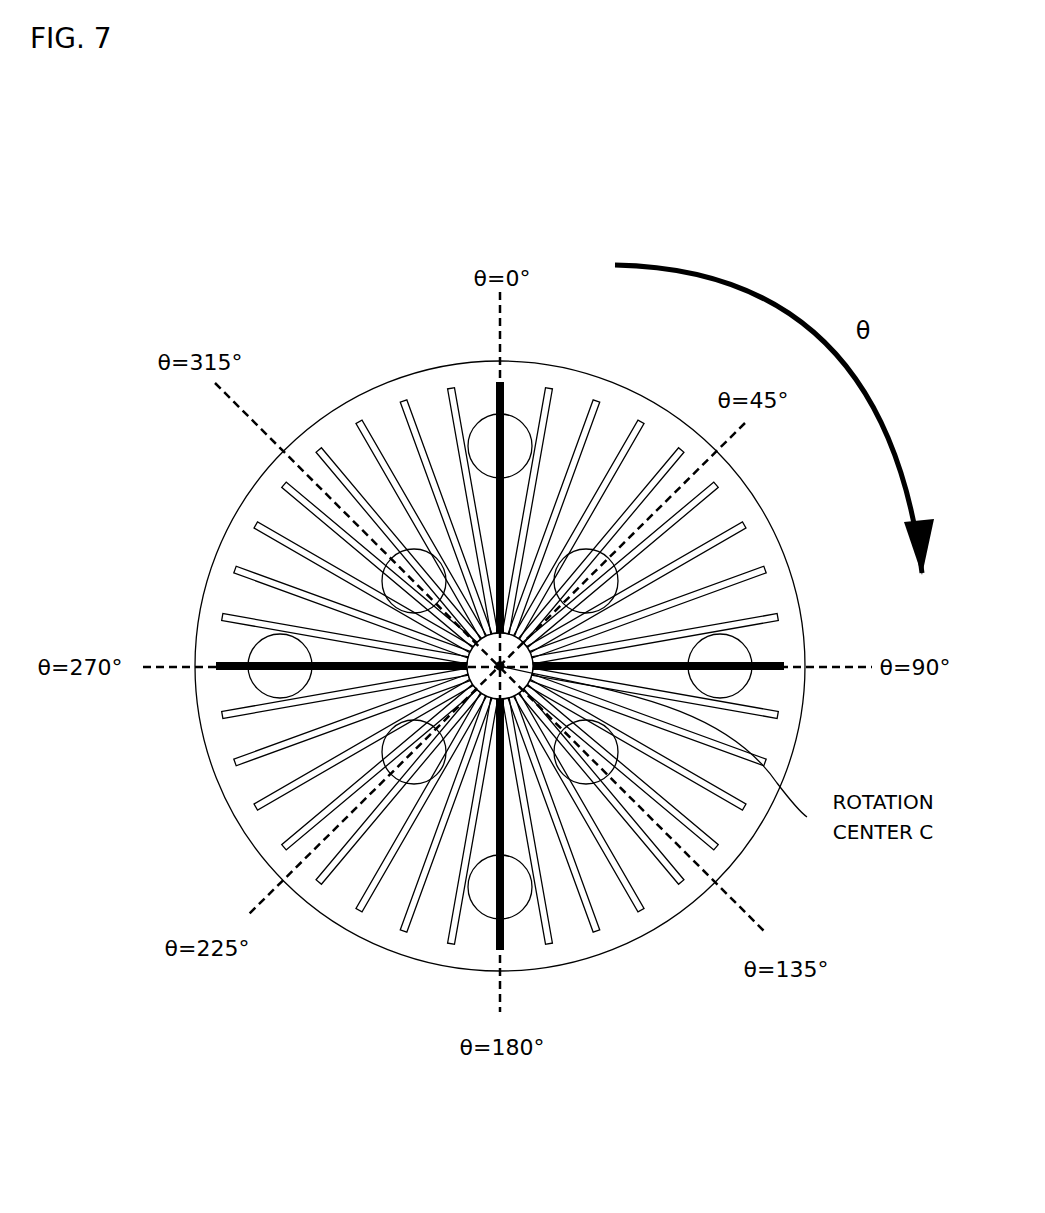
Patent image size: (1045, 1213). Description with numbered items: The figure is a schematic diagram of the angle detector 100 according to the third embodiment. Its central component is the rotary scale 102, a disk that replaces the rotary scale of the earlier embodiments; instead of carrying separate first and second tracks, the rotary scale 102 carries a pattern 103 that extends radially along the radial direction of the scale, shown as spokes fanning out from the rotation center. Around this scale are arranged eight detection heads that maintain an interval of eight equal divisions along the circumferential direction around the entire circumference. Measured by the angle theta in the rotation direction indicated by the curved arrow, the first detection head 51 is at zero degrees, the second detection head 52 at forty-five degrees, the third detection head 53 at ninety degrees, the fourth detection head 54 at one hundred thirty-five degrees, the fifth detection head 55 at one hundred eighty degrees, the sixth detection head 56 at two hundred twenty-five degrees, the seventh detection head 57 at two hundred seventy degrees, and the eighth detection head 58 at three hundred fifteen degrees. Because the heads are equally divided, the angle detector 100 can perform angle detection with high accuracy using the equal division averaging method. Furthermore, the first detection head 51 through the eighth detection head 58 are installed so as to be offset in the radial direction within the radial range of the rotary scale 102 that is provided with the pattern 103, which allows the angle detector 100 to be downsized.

The angle detector 100 is at (491, 688).
The rotary scale 102 is at (213, 557).
The pattern 103 is at (277, 537).
The first detection head 51 is at (513, 414).
The second detection head 52 is at (600, 549).
The third detection head 53 is at (745, 643).
The fourth detection head 54 is at (603, 783).
The fifth detection head 55 is at (531, 890).
The sixth detection head 56 is at (383, 765).
The seventh detection head 57 is at (253, 692).
The eighth detection head 58 is at (407, 549).